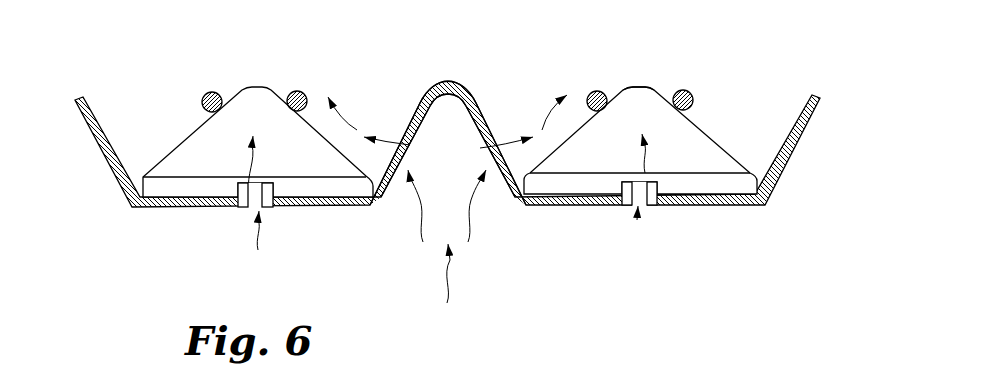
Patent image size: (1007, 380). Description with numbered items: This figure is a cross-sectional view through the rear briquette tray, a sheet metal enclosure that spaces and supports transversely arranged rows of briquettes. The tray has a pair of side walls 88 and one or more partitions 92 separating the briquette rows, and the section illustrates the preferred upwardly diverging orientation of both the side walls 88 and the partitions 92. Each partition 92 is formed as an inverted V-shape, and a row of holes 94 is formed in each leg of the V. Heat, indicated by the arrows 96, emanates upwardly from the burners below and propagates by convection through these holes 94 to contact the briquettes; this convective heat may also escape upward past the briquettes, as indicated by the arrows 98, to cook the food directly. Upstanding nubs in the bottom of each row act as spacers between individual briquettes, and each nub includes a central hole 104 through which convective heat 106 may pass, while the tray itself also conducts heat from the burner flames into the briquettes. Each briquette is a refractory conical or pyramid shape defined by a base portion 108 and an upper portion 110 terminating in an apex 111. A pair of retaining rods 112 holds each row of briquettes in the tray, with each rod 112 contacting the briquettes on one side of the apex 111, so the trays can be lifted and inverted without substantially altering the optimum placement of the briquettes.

The side wall 88 is at (89, 128).
The partition 92 is at (423, 93).
The holes 94 is at (482, 118).
The arrows indicating heat 96 is at (470, 268).
The arrows indicating escaping convective heat 98 is at (541, 128).
The central holes 104 is at (248, 207).
The convective heat 106 is at (258, 249).
The base portion 108 is at (755, 176).
The upper portion 110 is at (705, 130).
The apex 111 is at (645, 86).
The retaining rods 112 is at (203, 95).